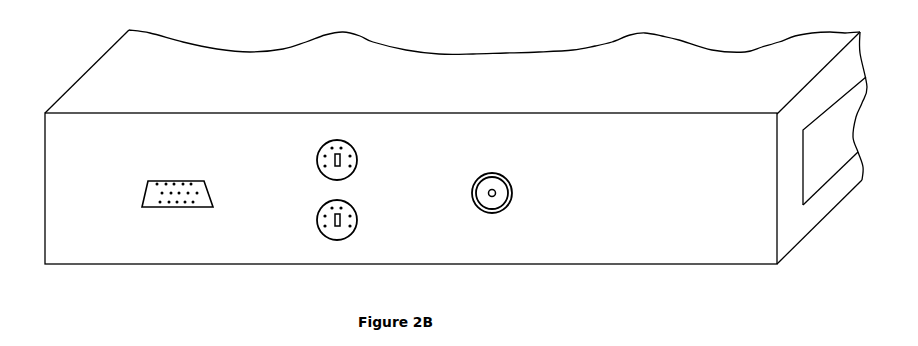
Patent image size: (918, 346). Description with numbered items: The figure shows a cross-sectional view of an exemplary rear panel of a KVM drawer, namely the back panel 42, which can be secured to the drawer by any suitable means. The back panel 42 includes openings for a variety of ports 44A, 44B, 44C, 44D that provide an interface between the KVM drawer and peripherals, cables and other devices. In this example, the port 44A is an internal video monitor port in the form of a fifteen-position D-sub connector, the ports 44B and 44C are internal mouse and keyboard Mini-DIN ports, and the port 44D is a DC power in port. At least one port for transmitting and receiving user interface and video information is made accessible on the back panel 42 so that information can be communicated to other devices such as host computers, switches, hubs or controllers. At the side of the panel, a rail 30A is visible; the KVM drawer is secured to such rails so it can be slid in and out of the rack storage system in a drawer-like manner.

The back panel 42 is at (98, 248).
The rail 30A is at (815, 163).
The internal video monitor port 44A is at (177, 183).
The internal mouse and keyboard port 44B is at (312, 160).
The internal mouse and keyboard port 44C is at (312, 220).
The DC power in port 44D is at (492, 186).